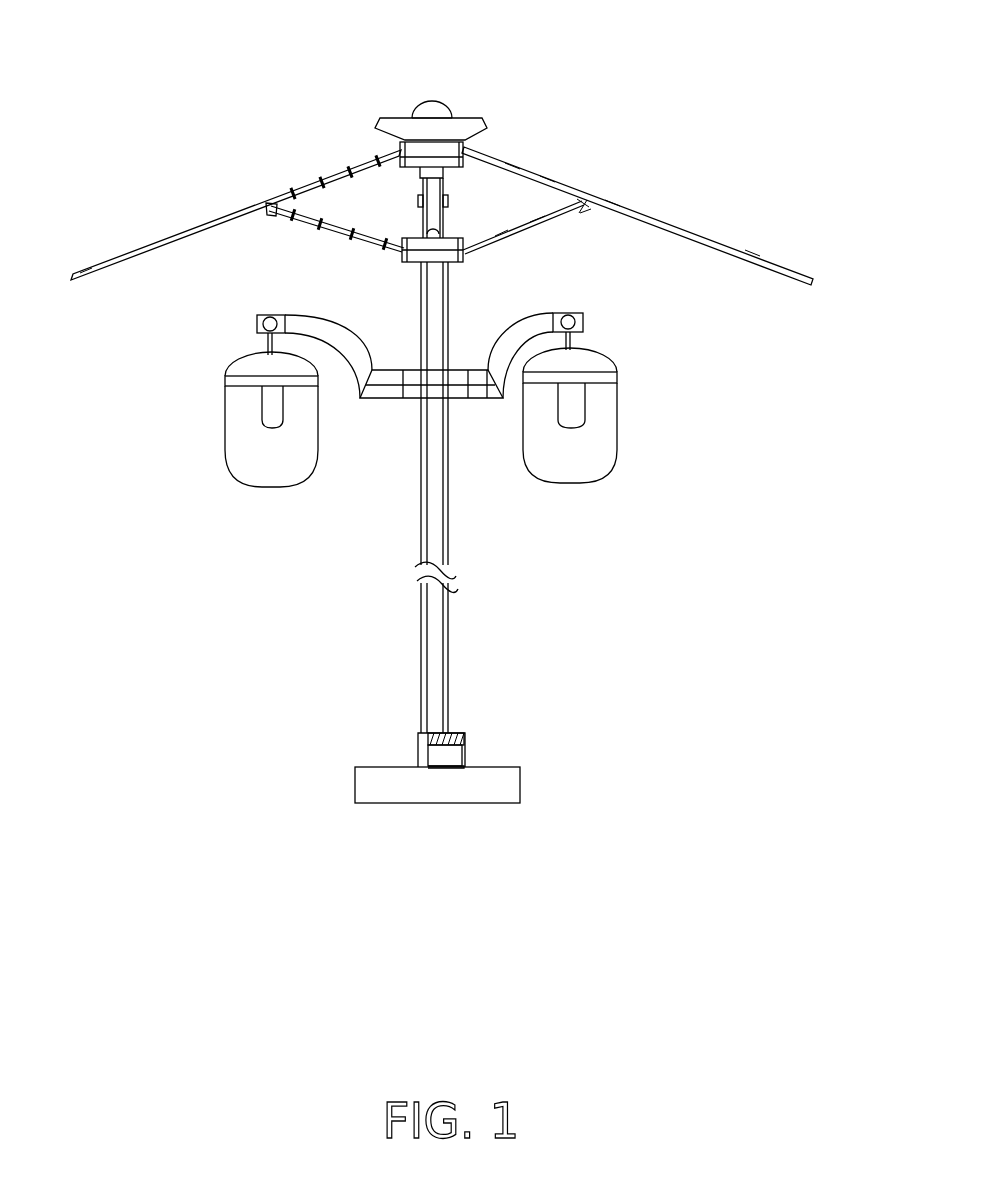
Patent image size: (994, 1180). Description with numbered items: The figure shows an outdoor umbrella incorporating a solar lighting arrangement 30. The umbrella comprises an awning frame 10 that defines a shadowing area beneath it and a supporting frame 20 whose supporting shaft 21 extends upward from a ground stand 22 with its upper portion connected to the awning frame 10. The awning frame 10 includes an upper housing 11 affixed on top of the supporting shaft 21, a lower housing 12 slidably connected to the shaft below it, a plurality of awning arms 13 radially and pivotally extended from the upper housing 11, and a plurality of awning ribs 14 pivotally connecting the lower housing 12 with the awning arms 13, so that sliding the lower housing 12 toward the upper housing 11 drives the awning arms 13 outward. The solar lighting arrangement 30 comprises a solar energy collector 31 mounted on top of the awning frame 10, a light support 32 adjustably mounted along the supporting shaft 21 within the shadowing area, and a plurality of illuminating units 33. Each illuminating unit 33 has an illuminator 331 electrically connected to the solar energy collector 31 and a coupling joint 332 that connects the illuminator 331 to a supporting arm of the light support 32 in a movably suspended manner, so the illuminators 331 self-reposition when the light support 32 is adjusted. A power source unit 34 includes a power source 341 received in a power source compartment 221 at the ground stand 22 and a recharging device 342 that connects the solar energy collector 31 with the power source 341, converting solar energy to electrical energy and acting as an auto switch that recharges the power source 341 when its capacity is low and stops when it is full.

The awning frame 10 is at (653, 91).
The upper housing 11 is at (455, 143).
The lower housing 12 is at (455, 262).
The awning arms 13 is at (737, 247).
The awning ribs 14 is at (583, 197).
The supporting frame 20 is at (638, 630).
The supporting shaft 21 is at (440, 520).
The ground stand 22 is at (515, 797).
The power source compartment 221 is at (472, 752).
The solar lighting arrangement 30 is at (132, 528).
The solar energy collector 31 is at (376, 111).
The light support 32 is at (382, 395).
The illuminating units 33 is at (744, 392).
The illuminator 331 is at (228, 402).
The coupling joint 332 is at (584, 341).
The power source unit 34 is at (292, 708).
The power source 341 is at (433, 753).
The recharging device 342 is at (421, 733).